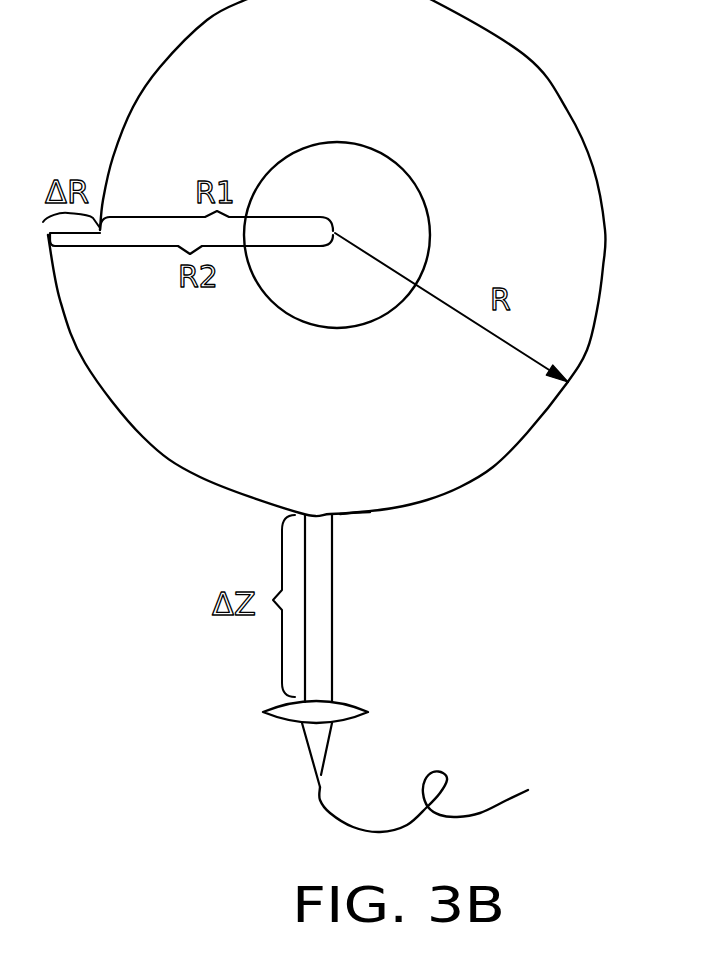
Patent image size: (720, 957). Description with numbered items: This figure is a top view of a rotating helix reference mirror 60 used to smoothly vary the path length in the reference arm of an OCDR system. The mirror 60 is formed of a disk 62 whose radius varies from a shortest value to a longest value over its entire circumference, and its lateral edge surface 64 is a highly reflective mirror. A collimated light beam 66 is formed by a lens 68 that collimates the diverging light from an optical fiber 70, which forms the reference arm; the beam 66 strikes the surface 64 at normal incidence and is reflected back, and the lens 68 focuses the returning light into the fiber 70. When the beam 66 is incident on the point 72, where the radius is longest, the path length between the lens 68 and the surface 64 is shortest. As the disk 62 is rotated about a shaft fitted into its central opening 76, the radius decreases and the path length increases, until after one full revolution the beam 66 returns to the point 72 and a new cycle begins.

The rotating helix reference mirror 60 is at (130, 491).
The disk 62 is at (95, 362).
The lateral edge surface 64 is at (370, 514).
The collimated light beam 66 is at (337, 633).
The lens 68 is at (370, 710).
The optical fiber 70 is at (443, 773).
The point 72 is at (56, 231).
The central opening 76 is at (414, 187).